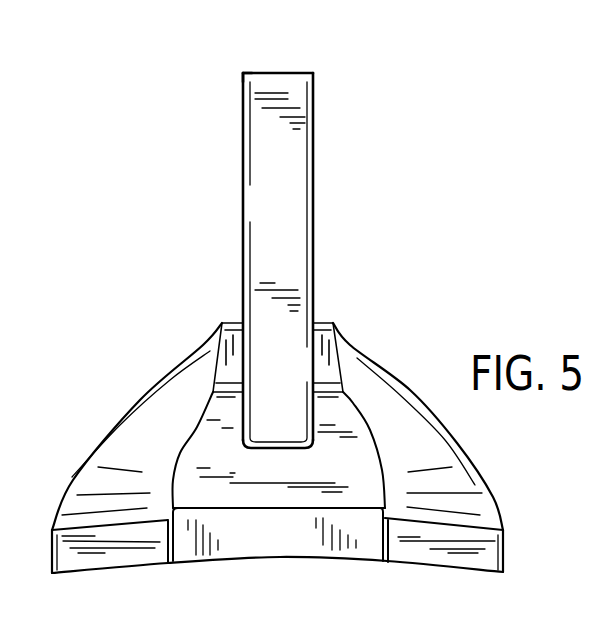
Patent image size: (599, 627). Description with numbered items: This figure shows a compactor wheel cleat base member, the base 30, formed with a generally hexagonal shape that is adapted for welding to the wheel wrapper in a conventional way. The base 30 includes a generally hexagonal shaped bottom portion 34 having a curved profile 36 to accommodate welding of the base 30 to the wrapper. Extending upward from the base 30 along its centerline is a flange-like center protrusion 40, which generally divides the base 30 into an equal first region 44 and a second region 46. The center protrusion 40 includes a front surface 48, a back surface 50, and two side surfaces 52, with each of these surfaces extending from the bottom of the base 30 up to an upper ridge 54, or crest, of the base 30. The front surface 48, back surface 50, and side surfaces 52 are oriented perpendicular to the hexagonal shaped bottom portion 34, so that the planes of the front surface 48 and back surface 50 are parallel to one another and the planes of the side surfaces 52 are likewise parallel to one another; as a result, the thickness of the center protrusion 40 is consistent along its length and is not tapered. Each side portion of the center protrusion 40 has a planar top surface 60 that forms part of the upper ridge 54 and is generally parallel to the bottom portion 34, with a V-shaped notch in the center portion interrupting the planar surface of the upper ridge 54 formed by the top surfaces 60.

The base 30 is at (407, 112).
The bottom portion 34 is at (504, 550).
The curved profile 36 is at (202, 568).
The center protrusion 40 is at (323, 152).
The first region 44 is at (213, 243).
The second region 46 is at (371, 243).
The front surface 48 is at (242, 128).
The back surface 50 is at (315, 192).
The side surface 52 is at (292, 221).
The upper ridge 54 is at (263, 67).
The top surface 60 is at (295, 73).